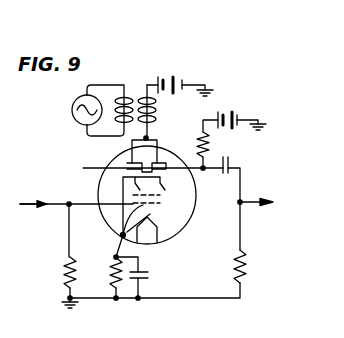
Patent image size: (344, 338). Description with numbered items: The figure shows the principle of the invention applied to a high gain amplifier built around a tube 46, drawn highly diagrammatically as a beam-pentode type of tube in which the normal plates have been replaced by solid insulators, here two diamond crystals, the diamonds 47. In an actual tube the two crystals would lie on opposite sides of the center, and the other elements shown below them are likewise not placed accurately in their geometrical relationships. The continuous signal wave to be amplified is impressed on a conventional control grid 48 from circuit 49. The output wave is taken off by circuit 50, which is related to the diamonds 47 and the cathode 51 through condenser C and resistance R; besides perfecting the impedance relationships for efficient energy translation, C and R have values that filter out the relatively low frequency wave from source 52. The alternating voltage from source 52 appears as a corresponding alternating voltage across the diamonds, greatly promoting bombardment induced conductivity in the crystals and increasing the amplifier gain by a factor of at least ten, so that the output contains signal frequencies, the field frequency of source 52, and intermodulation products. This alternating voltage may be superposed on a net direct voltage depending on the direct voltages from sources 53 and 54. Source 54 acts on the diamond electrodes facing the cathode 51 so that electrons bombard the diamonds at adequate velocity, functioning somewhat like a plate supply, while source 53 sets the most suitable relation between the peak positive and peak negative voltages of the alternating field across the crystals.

The tube 46 is at (148, 198).
The diamonds 47 is at (156, 162).
The control grid 48 is at (121, 235).
The circuit 49 is at (33, 208).
The circuit 50 is at (247, 197).
The cathode 51 is at (158, 223).
The source 52 is at (76, 122).
The source 53 is at (183, 78).
The source 54 is at (233, 110).
The condenser C is at (227, 156).
The resistance R is at (247, 268).